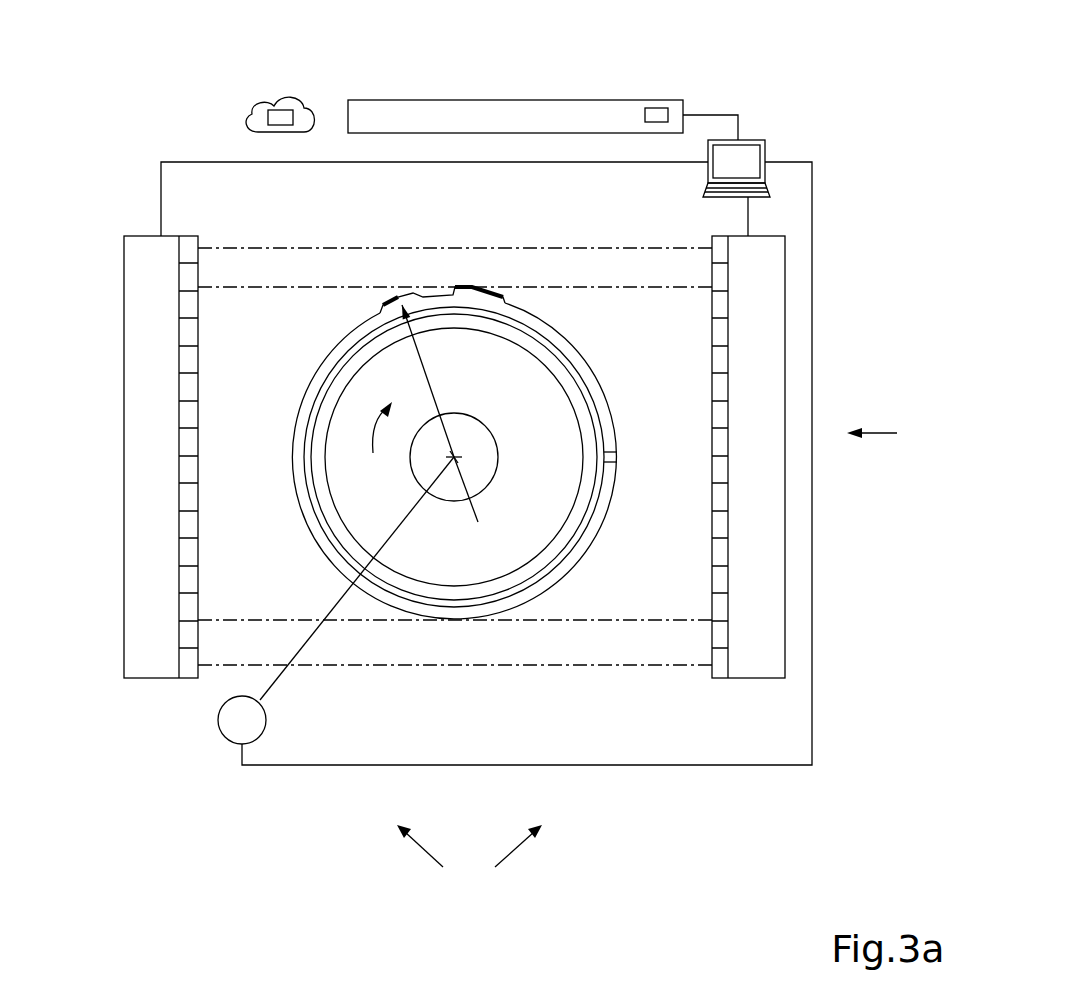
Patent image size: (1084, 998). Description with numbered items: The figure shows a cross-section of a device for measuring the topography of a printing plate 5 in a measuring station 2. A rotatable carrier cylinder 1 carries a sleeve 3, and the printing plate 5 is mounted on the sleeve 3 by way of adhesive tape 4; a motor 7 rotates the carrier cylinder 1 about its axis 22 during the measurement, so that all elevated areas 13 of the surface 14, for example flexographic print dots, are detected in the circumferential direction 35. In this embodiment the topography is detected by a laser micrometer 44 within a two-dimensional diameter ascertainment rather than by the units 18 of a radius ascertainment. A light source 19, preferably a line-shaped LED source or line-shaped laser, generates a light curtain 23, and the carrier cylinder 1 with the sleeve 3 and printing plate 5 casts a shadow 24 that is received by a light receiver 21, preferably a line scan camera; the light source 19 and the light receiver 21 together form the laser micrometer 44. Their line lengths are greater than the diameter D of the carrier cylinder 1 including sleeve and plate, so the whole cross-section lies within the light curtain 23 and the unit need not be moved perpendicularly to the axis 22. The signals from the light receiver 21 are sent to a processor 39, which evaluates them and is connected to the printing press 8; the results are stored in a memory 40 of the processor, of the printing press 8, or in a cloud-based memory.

The carrier cylinder 1 is at (402, 553).
The measuring station 2 is at (687, 817).
The sleeve 3 is at (423, 587).
The adhesive tape 4 is at (593, 513).
The printing plate 5 is at (545, 580).
The motor 7 is at (227, 738).
The printing press 8 is at (392, 118).
The elevated areas 13 is at (473, 287).
The surface 14 is at (557, 330).
The units 18 is at (895, 433).
The light source 19 is at (753, 660).
The light receiver 21 is at (150, 655).
The axis 22 is at (443, 494).
The light curtain 23 is at (672, 607).
The shadow 24 is at (235, 572).
The circumferential direction 35 is at (373, 435).
The processor 39 is at (745, 140).
The memory 40 is at (283, 118).
The laser micrometer 44 is at (469, 860).
The diameter D is at (483, 537).